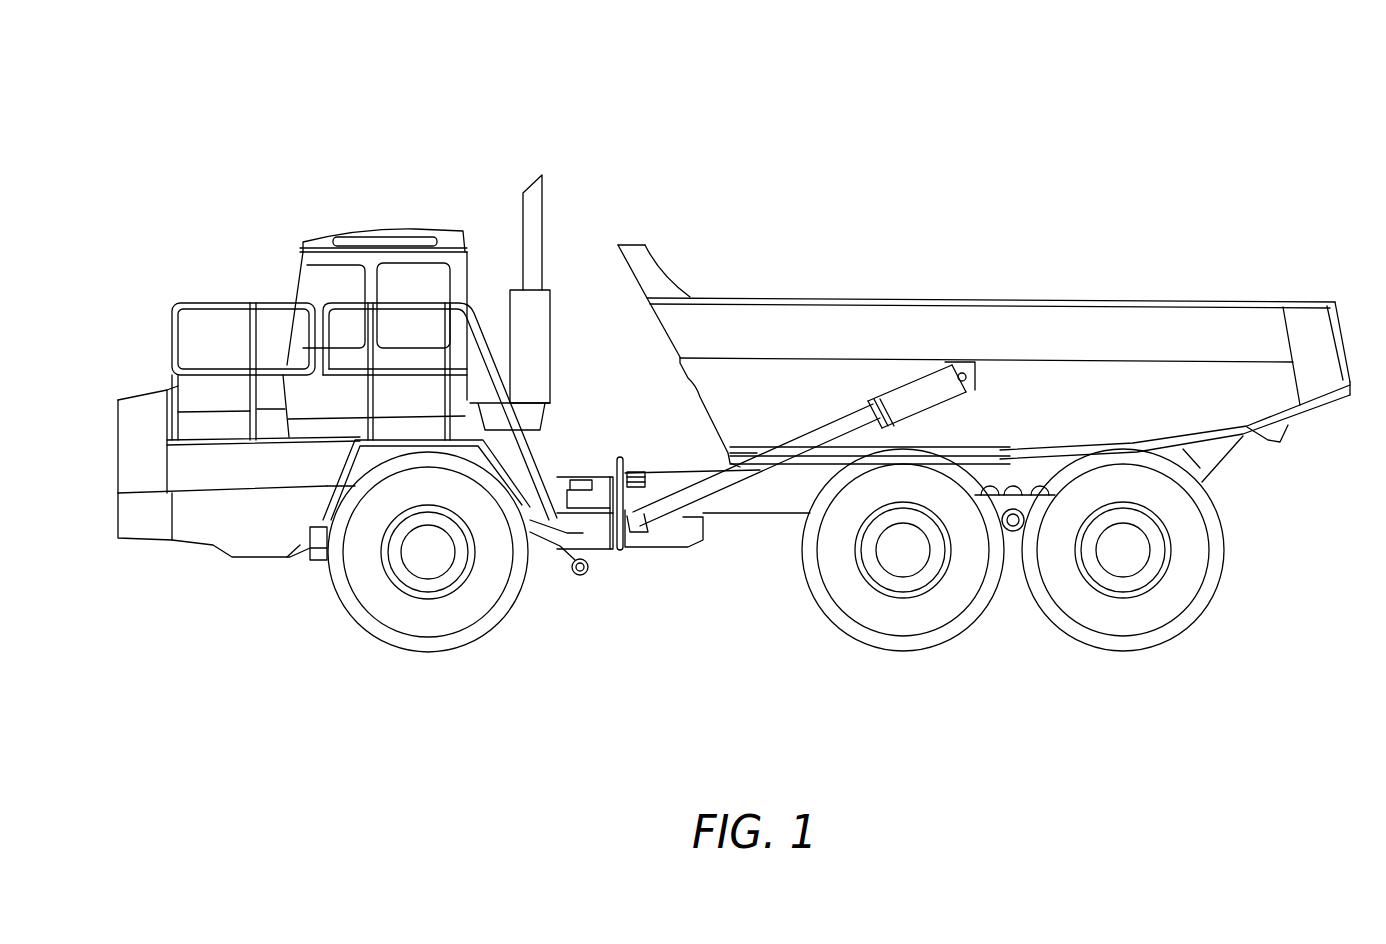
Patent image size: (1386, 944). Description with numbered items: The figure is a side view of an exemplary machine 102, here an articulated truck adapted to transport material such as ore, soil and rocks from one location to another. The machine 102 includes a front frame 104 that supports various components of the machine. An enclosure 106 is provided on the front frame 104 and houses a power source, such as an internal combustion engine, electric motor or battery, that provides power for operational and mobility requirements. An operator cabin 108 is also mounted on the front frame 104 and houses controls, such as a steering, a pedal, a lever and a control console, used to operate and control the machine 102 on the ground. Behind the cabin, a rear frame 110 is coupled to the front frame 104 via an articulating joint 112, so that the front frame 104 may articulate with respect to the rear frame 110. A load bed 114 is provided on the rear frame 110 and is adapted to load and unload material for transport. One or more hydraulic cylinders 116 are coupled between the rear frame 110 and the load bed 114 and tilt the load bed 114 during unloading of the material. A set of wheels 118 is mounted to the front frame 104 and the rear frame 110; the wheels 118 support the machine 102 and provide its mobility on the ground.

The machine 102 is at (1182, 96).
The front frame 104 is at (260, 553).
The enclosure 106 is at (134, 405).
The operator cabin 108 is at (386, 230).
The rear frame 110 is at (776, 505).
The articulating joint 112 is at (637, 563).
The load bed 114 is at (1070, 409).
The hydraulic cylinders 116 is at (702, 500).
The wheels 118 is at (432, 630).